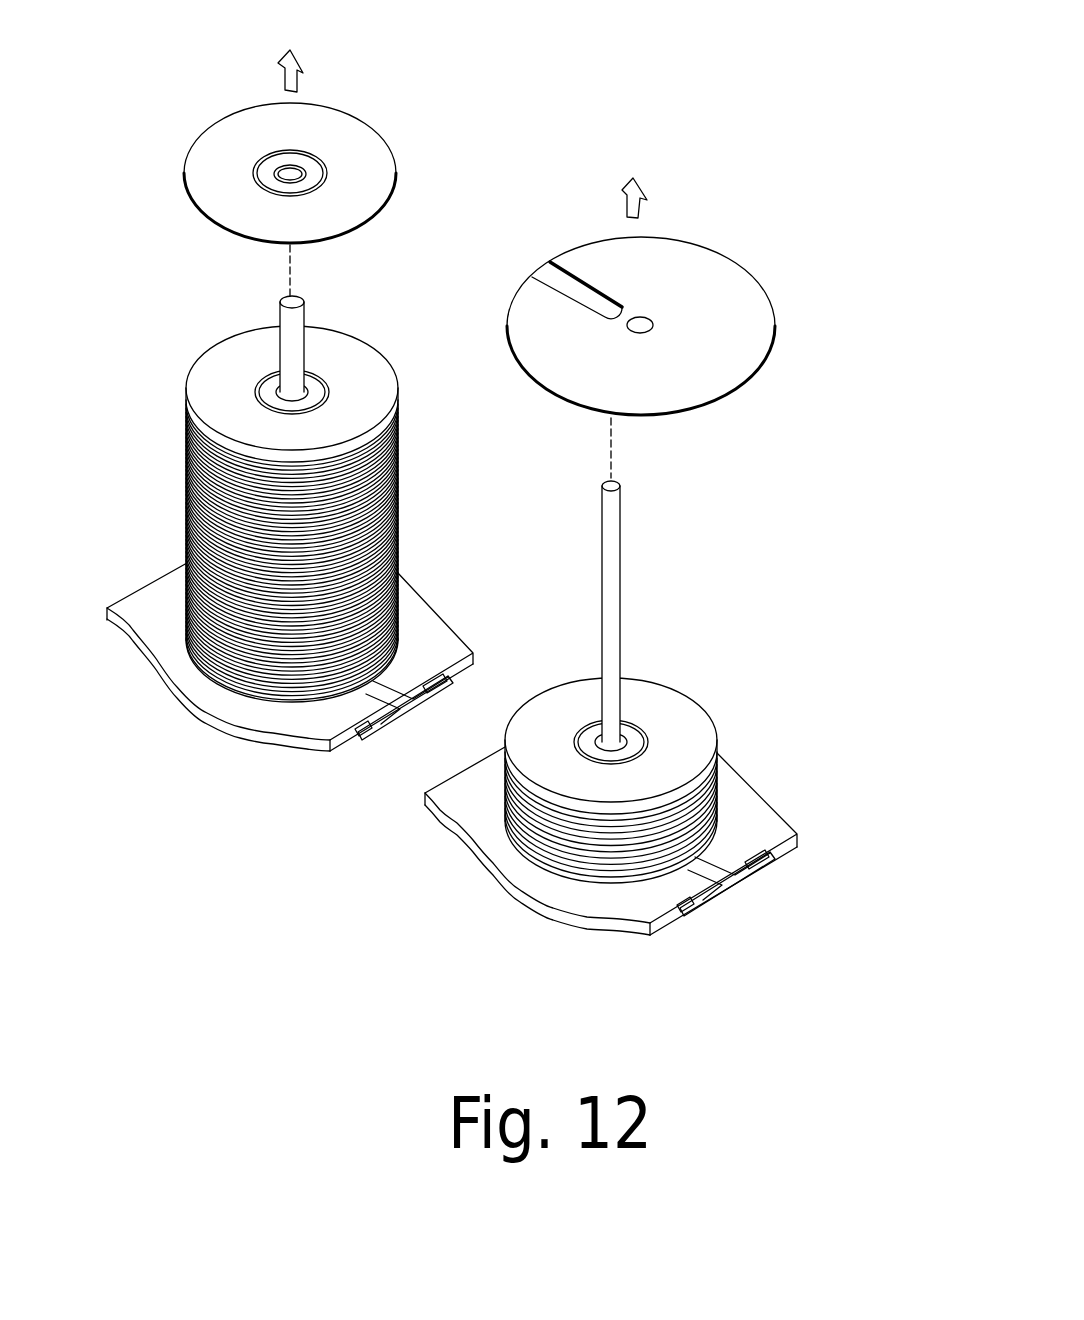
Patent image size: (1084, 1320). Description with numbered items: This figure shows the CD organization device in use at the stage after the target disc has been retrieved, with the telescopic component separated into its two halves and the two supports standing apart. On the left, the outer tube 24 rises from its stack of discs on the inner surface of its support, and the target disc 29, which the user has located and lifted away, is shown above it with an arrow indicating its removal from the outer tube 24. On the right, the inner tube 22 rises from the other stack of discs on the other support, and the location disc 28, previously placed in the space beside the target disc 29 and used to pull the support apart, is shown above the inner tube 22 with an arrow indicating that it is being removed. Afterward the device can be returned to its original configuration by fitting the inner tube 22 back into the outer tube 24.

The inner tube 22 is at (620, 530).
The outer tube 24 is at (290, 342).
The location disc 28 is at (760, 315).
The target disc 29 is at (365, 140).